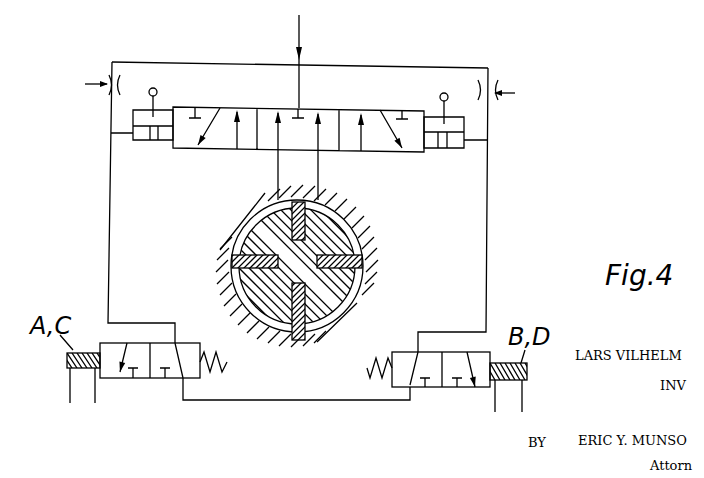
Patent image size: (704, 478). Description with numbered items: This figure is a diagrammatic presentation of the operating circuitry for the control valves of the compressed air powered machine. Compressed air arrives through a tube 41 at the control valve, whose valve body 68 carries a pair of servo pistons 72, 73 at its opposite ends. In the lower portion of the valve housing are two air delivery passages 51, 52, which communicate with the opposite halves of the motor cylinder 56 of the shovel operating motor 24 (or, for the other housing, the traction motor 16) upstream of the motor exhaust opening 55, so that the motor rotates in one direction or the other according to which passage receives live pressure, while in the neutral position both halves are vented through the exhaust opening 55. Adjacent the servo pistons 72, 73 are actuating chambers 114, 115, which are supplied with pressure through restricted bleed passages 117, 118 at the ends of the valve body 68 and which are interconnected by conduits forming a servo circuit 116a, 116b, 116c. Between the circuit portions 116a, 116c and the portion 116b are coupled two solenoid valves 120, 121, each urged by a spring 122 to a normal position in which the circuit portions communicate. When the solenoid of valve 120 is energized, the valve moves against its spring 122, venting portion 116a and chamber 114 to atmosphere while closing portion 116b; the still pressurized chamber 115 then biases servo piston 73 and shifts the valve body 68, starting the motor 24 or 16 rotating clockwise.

The tube 41 is at (299, 25).
The air delivery passage 51 is at (277, 173).
The air delivery passage 52 is at (318, 173).
The motor exhaust opening 55 is at (297, 343).
The motor cylinder 56 is at (230, 277).
The valve body 68 is at (225, 117).
The servo piston 72 is at (155, 141).
The servo piston 73 is at (440, 149).
The actuating chamber 114 is at (142, 140).
The actuating chamber 115 is at (455, 149).
The servo circuit portion 116a is at (110, 214).
The servo circuit portion 116b is at (268, 402).
The servo circuit portion 116c is at (487, 225).
The restricted bleed passage 117 is at (82, 85).
The restricted bleed passage 118 is at (519, 94).
The solenoid valve 120 is at (142, 380).
The solenoid valve 121 is at (450, 390).
The spring 122 is at (377, 355).
The shovel operating motor 24 is at (301, 270).
The traction motor 16 is at (353, 231).